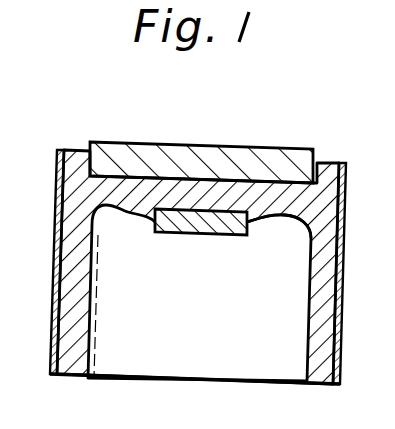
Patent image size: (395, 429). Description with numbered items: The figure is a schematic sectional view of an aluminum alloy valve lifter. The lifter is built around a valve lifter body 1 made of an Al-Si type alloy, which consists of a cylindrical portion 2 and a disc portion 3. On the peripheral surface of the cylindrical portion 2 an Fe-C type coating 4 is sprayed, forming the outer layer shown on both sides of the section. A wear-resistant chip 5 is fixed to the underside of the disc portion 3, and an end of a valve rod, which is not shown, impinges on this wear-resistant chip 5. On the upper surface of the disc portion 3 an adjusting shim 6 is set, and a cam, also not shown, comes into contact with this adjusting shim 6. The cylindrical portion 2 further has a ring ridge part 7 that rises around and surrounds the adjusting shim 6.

The valve lifter body 1 is at (214, 243).
The cylindrical portion 2 is at (317, 340).
The disc portion 3 is at (254, 200).
The Fe-C type coating 4 is at (343, 313).
The wear-resistant chip 5 is at (177, 225).
The adjusting shim 6 is at (175, 152).
The ring ridge part 7 is at (78, 150).